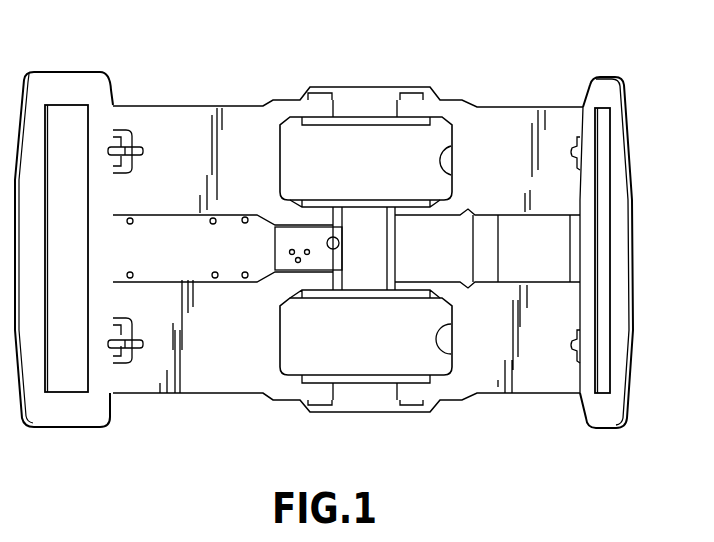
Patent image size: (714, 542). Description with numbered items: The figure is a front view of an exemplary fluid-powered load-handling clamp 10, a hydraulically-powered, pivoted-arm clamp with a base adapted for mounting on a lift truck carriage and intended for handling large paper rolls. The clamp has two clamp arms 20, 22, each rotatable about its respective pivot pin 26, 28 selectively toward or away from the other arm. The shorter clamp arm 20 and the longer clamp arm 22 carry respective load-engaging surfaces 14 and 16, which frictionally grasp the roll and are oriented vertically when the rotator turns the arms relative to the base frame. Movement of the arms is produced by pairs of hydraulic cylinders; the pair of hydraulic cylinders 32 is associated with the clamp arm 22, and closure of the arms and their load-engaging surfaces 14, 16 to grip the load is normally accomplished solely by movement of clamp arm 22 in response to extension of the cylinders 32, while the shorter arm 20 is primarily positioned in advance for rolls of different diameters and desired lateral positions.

The load-handling clamp 10 is at (494, 48).
The load-engaging surface 14 is at (70, 72).
The load-engaging surface 16 is at (605, 77).
The clamp arm 20 is at (200, 106).
The clamp arm 22 is at (521, 409).
The pivot pin 26 is at (319, 87).
The pivot pin 28 is at (411, 87).
The hydraulic cylinders 32 is at (440, 155).